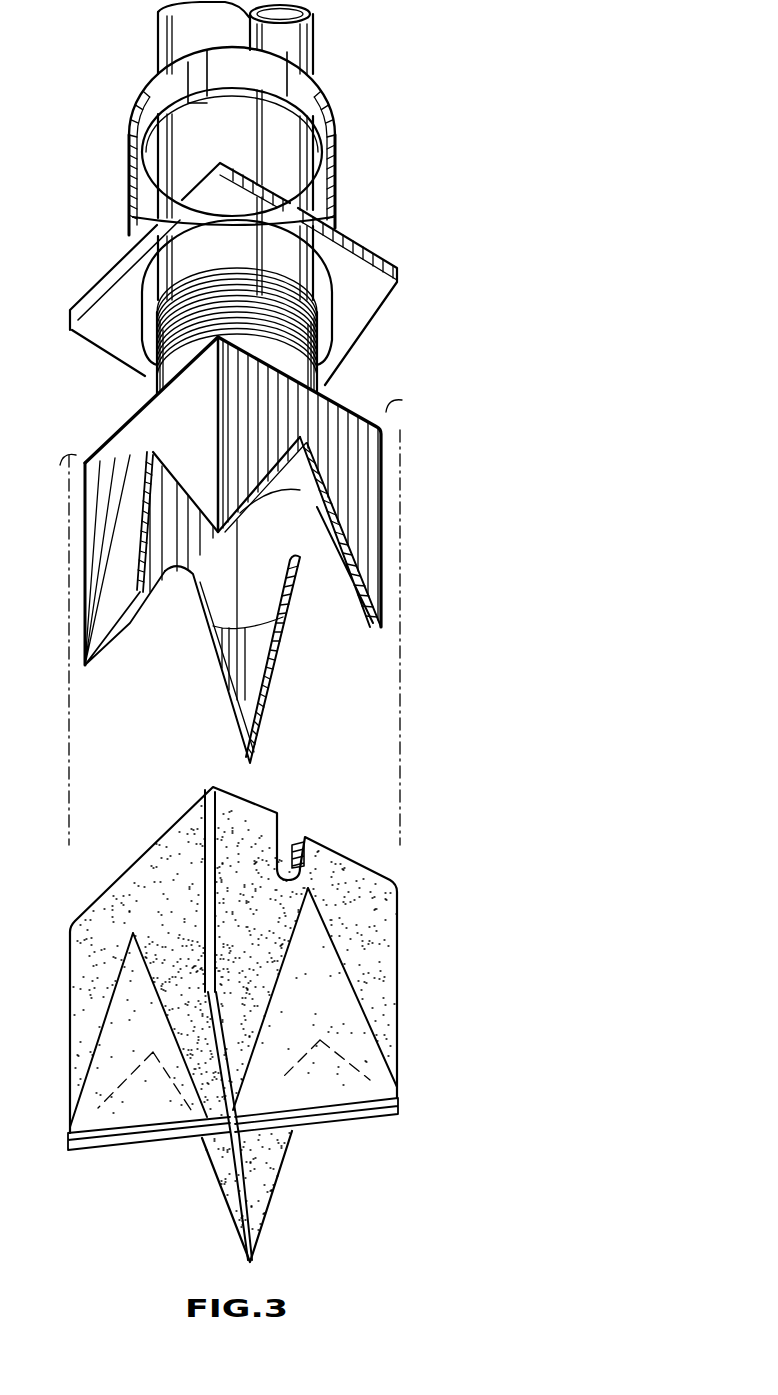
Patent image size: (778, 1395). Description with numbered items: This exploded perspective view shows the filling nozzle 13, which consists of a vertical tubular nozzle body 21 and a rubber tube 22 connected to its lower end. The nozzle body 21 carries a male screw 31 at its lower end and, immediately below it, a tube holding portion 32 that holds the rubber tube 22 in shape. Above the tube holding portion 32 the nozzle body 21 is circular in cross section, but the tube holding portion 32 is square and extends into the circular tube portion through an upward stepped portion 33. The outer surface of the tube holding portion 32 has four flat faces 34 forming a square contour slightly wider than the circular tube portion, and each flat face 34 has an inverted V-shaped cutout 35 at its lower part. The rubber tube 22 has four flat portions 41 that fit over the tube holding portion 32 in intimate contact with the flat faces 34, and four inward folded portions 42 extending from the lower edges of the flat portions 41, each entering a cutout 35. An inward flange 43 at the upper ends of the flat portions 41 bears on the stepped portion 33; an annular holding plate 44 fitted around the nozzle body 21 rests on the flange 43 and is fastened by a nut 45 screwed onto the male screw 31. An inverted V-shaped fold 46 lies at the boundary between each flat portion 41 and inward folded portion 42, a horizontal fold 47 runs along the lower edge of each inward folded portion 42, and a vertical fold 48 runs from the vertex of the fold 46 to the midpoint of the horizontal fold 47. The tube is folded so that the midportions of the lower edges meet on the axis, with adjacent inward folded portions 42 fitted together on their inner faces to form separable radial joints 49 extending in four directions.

The filling nozzle 13 is at (276, 632).
The nozzle body 21 is at (317, 62).
The rubber tube 22 is at (247, 1024).
The male screw 31 is at (323, 368).
The tube holding portion 32 is at (238, 550).
The stepped portion 33 is at (382, 414).
The flat face 34 is at (133, 437).
The inverted V-shaped cutout 35 is at (131, 534).
The flat portion 41 is at (130, 890).
The inward folded portion 42 is at (107, 1053).
The inward flange 43 is at (287, 840).
The annular holding plate 44 is at (392, 260).
The nut 45 is at (342, 150).
The inverted V-shaped fold 46 is at (157, 953).
The horizontal fold 47 is at (105, 1130).
The vertical fold 48 is at (205, 1000).
The separable radial joint 49 is at (177, 1137).